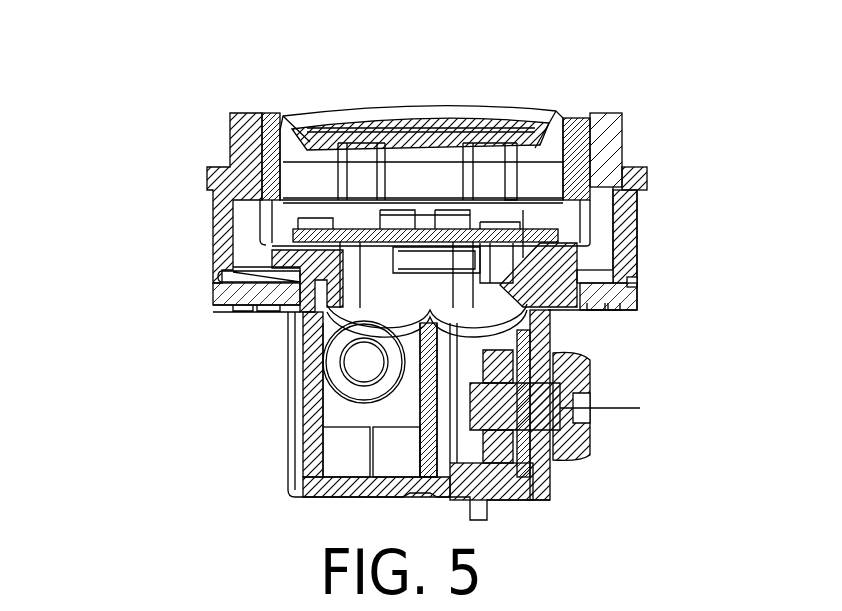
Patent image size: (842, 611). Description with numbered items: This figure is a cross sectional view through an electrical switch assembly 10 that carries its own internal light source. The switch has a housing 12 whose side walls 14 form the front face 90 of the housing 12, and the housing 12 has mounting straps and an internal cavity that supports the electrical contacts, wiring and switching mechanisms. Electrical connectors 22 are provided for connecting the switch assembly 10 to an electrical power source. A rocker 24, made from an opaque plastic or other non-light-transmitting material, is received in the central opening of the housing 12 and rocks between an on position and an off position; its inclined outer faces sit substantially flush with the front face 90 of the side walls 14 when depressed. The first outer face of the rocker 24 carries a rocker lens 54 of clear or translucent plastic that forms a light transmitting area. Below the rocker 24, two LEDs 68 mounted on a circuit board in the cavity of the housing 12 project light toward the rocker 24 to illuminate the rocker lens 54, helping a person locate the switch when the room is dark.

The electrical switch assembly 10 is at (170, 190).
The housing 12 is at (285, 373).
The side walls 14 is at (628, 148).
The electrical connectors 22 is at (585, 455).
The rocker 24 is at (275, 113).
The rocker lens 54 is at (525, 106).
The LEDs 68 is at (385, 210).
The front face 90 is at (607, 112).